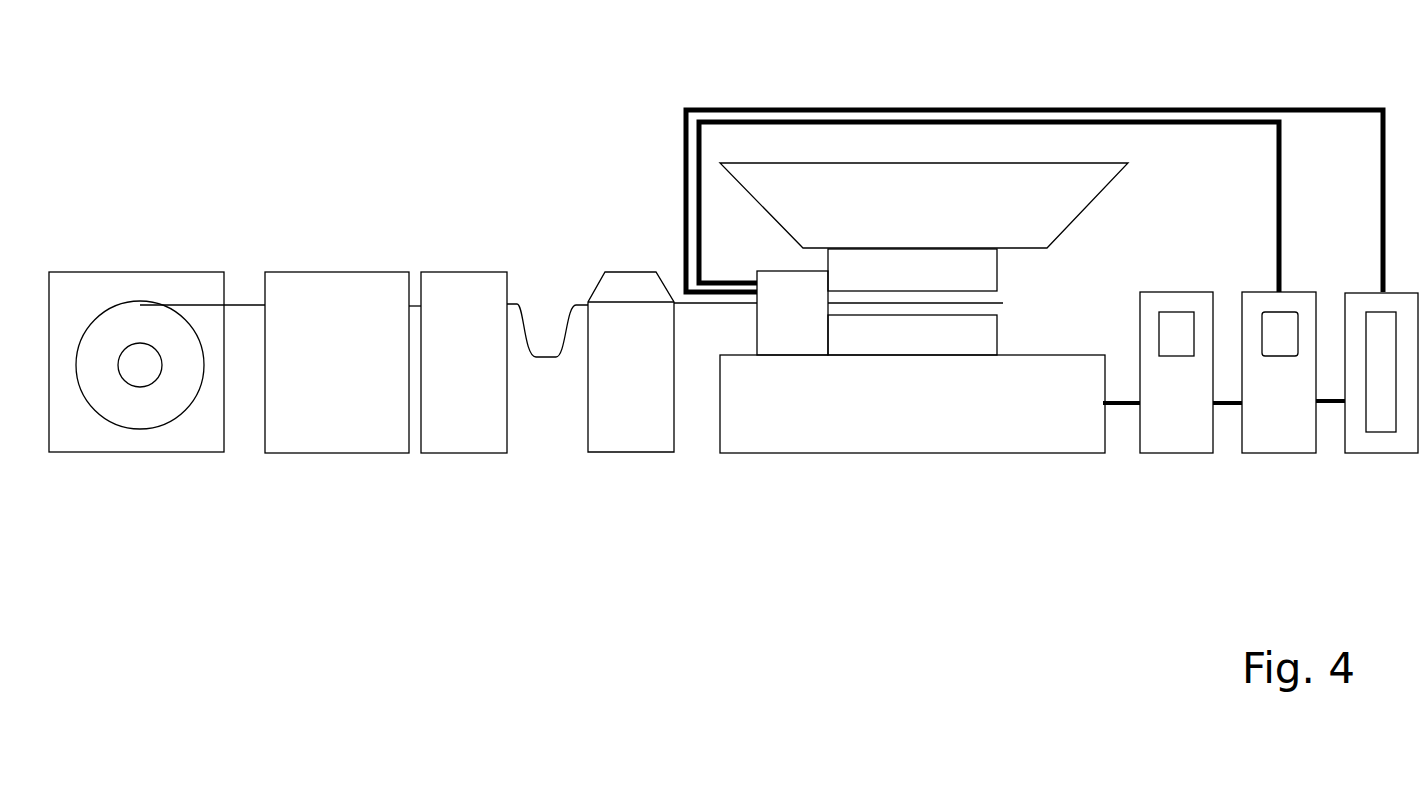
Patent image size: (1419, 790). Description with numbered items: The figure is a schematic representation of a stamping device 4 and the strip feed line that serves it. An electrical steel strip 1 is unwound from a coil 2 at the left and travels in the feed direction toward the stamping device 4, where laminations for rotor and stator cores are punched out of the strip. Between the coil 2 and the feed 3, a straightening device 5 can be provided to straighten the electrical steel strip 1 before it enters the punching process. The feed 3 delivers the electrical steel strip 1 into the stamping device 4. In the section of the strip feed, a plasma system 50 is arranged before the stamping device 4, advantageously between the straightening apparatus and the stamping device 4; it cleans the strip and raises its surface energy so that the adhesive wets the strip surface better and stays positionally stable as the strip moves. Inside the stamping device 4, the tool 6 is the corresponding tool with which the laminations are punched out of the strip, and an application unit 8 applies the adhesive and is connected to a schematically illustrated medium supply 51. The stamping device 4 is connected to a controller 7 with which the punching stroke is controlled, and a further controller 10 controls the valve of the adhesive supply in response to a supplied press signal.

The electrical steel strip 1 is at (238, 299).
The coil 2 is at (138, 266).
The feed 3 is at (632, 269).
The stamping device 4 is at (924, 162).
The straightening device 5 is at (328, 266).
The tool 6 is at (873, 272).
The controller 7 is at (1137, 373).
The application unit 8 is at (767, 305).
The controller 10 is at (1240, 375).
The plasma system 50 is at (465, 267).
The medium supply 51 is at (1378, 457).